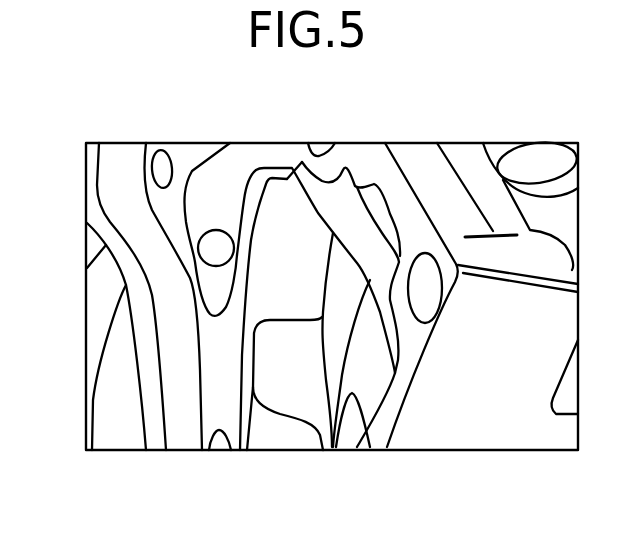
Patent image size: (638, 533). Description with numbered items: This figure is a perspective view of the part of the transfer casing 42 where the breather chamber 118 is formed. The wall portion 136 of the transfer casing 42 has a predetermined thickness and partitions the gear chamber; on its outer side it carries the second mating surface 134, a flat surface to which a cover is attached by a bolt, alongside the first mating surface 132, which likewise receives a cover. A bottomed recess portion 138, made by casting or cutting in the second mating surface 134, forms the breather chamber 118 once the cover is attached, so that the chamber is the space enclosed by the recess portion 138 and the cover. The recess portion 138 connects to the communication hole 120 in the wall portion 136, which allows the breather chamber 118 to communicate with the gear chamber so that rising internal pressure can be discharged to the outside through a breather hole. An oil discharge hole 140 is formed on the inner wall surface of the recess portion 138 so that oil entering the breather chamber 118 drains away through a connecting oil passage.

The transfer casing 42 is at (495, 112).
The breather chamber 118 is at (211, 183).
The communication hole 120 is at (277, 157).
The first mating surface 132 is at (373, 167).
The second mating surface 134 is at (217, 402).
The wall portion 136 is at (294, 354).
The recess portion 138 is at (200, 207).
The oil discharge hole 140 is at (212, 252).